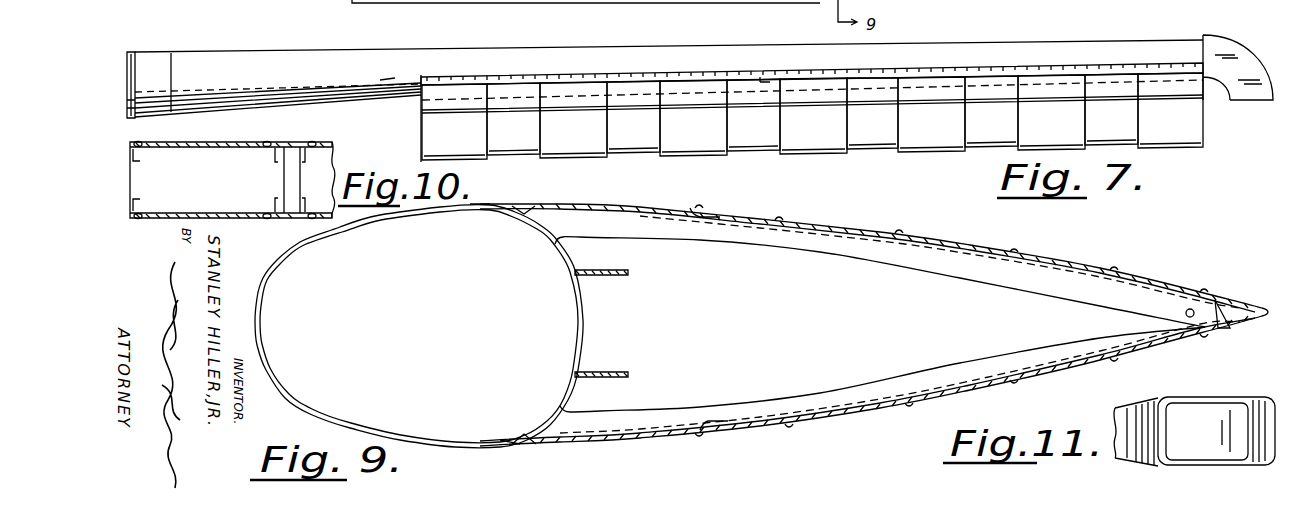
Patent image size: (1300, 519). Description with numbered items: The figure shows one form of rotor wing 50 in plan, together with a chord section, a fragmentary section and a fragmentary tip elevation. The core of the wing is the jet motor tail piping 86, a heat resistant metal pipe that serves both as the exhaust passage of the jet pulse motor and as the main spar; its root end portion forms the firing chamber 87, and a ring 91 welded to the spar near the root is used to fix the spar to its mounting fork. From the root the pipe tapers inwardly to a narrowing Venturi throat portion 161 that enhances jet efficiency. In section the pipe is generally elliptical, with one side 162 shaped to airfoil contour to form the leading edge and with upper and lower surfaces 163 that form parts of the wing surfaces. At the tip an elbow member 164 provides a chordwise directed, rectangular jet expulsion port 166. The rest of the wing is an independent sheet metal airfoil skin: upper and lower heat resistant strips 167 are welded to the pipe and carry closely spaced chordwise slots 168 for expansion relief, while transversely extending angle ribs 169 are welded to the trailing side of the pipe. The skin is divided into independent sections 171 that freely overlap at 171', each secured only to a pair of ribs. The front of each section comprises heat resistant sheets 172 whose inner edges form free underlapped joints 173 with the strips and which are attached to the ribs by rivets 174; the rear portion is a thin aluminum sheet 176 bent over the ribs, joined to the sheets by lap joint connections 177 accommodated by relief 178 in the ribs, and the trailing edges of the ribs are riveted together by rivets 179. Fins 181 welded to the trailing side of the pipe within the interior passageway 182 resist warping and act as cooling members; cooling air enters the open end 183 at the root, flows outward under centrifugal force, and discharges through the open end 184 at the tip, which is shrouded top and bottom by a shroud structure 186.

In FIG. 7, the rotor wing 50 is at (995, 48).
In FIG. 7, the jet motor tail piping 86 is at (252, 57).
In FIG. 9, the jet motor tail piping 86 is at (428, 212).
In FIG. 7, the firing chamber 87 is at (168, 60).
In FIG. 7, the ring 91 is at (133, 50).
In FIG. 7, the Venturi throat portion 161 is at (382, 80).
In FIG. 9, the leading edge side of pipe 162 is at (286, 270).
In FIG. 9, the upper and lower pipe surfaces 163 is at (352, 229).
In FIG. 7, the elbow member 164 is at (1228, 52).
In FIG. 11, the jet expulsion port 166 is at (1208, 410).
In FIG. 7, the heat resistant strip 167 is at (635, 76).
In FIG. 9, the heat resistant strip 167 is at (506, 206).
In FIG. 7, the chordwise slot 168 is at (806, 78).
In FIG. 10, the rib 169 is at (138, 154).
In FIG. 9, the rib 169 is at (812, 248).
In FIG. 7, the airfoil skin section 171 is at (812, 92).
In FIG. 10, the airfoil skin section 171 is at (268, 128).
In FIG. 9, the airfoil skin section 171 is at (1082, 246).
In FIG. 7, the skin section overlap 171' is at (812, 90).
In FIG. 10, the skin section overlap 171' is at (281, 128).
In FIG. 9, the front skin sheet 172 is at (560, 203).
In FIG. 9, the free underlapped joint 173 is at (522, 213).
In FIG. 9, the rivet 174 is at (668, 204).
In FIG. 9, the aluminum sheet 176 is at (952, 242).
In FIG. 9, the lap joint connection 177 is at (710, 218).
In FIG. 9, the rib relief 178 is at (692, 216).
In FIG. 9, the trailing edge rivet 179 is at (1190, 308).
In FIG. 7, the fin 181 is at (800, 100).
In FIG. 9, the fin 181 is at (598, 270).
In FIG. 9, the interior passageway 182 is at (828, 326).
In FIG. 7, the open root end 183 is at (421, 137).
In FIG. 7, the open tip end 184 is at (1215, 126).
In FIG. 11, the open tip end 184 is at (1130, 420).
In FIG. 7, the shroud structure 186 is at (1215, 105).
In FIG. 11, the shroud structure 186 is at (1136, 400).